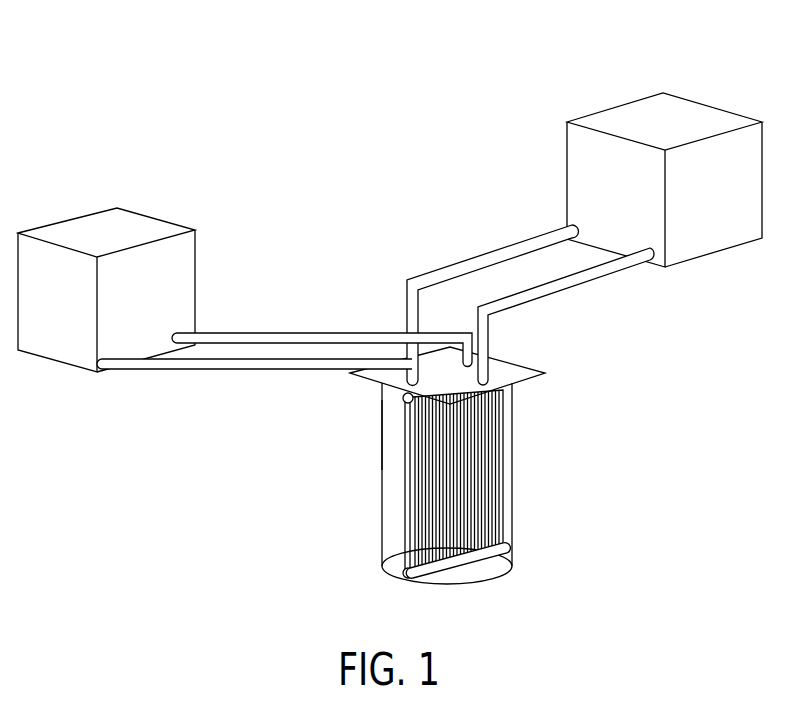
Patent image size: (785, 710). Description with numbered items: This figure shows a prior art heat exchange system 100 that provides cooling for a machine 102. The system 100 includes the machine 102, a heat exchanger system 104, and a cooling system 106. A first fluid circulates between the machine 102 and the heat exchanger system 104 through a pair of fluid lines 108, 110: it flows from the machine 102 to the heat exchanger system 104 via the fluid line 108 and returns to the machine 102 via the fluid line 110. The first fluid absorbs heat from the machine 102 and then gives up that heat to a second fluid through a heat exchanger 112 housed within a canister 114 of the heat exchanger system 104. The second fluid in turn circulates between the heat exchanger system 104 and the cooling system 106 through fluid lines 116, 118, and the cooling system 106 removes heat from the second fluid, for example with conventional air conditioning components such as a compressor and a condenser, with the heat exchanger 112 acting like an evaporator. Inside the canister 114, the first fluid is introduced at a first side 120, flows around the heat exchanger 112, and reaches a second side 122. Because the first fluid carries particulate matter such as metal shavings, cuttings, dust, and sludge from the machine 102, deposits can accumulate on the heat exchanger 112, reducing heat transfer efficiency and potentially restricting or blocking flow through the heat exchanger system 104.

The heat exchange system 100 is at (128, 92).
The machine 102 is at (633, 118).
The heat exchanger system 104 is at (533, 501).
The cooling system 106 is at (97, 223).
The fluid line 108 is at (492, 258).
The fluid line 110 is at (565, 282).
The heat exchanger 112 is at (408, 522).
The canister 114 is at (381, 487).
The fluid line 116 is at (170, 367).
The fluid line 118 is at (250, 338).
The first side 120 is at (388, 452).
The second side 122 is at (505, 448).